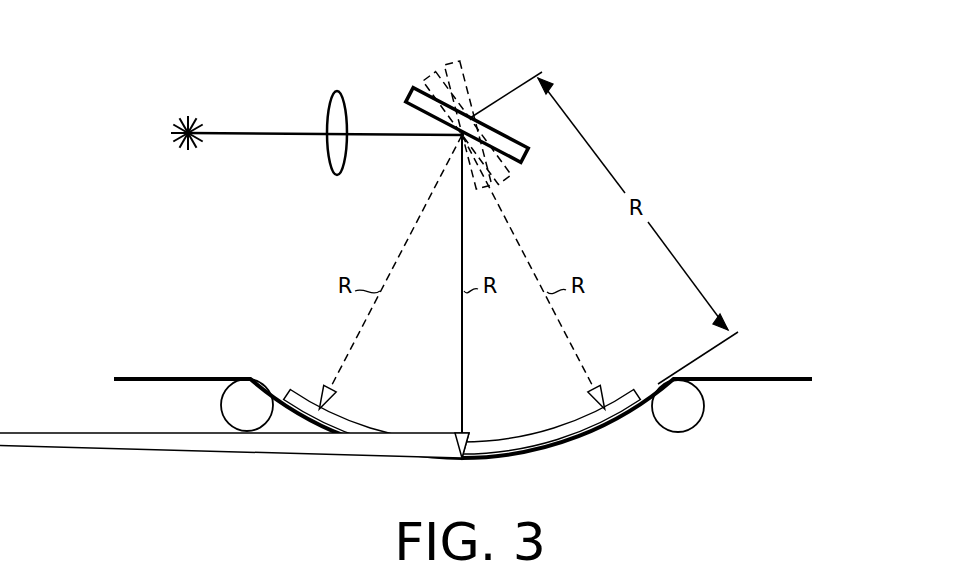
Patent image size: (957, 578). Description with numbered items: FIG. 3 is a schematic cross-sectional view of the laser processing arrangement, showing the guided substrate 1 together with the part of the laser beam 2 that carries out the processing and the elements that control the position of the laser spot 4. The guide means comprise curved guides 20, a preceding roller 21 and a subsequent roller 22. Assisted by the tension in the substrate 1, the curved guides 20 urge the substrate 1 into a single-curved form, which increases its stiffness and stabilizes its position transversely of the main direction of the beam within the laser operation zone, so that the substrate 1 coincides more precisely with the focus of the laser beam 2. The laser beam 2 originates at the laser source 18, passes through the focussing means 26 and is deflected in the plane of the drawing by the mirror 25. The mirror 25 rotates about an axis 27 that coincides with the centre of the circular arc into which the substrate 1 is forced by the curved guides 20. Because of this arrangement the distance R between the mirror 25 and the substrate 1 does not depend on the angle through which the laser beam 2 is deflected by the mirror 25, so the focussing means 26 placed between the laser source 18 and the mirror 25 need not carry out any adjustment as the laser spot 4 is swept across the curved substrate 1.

The substrate 1 is at (779, 378).
The laser beam 2 is at (258, 132).
The laser spot 4 is at (466, 455).
The laser source 18 is at (171, 133).
The curved guides 20 is at (574, 434).
The preceding roller 21 is at (240, 416).
The subsequent roller 22 is at (688, 416).
The mirror 25 is at (412, 93).
The focussing means 26 is at (337, 91).
The axis 27 is at (448, 140).